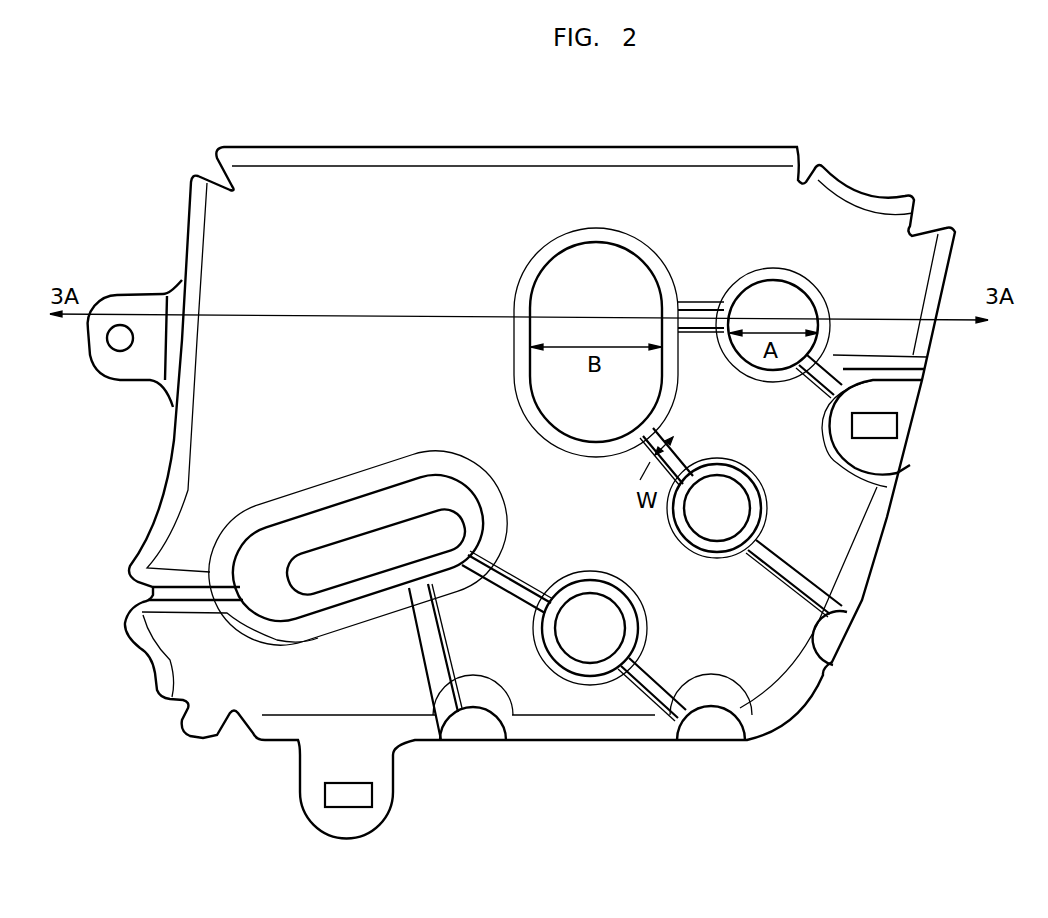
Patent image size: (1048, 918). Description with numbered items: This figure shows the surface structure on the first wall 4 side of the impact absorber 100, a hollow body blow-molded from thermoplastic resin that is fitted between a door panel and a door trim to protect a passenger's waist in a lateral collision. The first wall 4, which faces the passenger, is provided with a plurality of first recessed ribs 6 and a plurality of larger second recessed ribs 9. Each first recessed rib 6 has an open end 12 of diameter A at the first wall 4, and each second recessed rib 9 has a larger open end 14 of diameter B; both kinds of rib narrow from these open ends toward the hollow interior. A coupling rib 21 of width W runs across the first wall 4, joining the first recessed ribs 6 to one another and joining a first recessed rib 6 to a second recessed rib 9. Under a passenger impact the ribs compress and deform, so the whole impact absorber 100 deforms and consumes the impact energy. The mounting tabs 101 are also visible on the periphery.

The impact absorber 100 is at (834, 136).
The first wall 4 is at (460, 195).
The first recessed rib 6 is at (770, 270).
The second recessed rib 9 is at (518, 310).
The open end 12 is at (752, 380).
The open end 14 is at (565, 380).
The coupling rib 21 is at (700, 305).
The mounting tab 101 is at (118, 372).